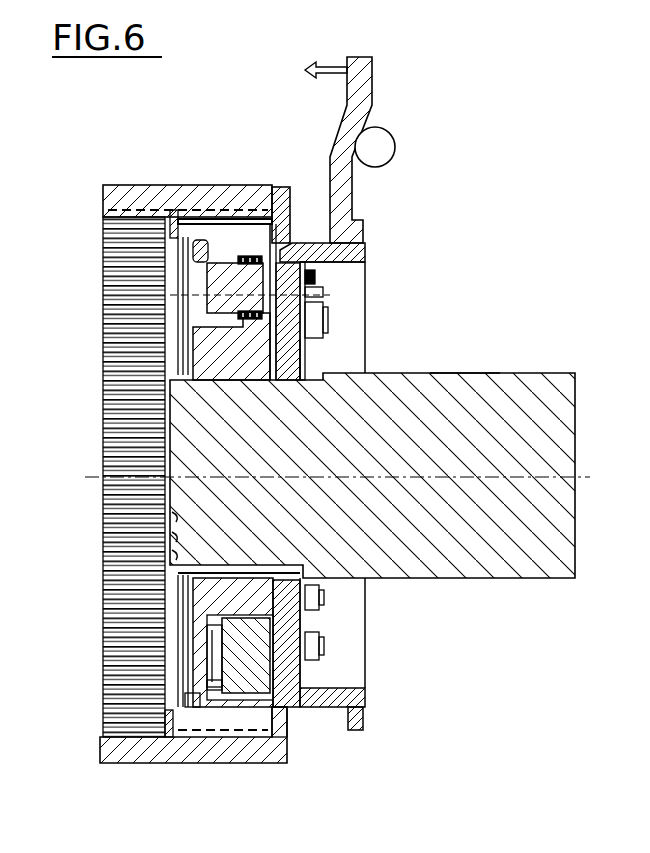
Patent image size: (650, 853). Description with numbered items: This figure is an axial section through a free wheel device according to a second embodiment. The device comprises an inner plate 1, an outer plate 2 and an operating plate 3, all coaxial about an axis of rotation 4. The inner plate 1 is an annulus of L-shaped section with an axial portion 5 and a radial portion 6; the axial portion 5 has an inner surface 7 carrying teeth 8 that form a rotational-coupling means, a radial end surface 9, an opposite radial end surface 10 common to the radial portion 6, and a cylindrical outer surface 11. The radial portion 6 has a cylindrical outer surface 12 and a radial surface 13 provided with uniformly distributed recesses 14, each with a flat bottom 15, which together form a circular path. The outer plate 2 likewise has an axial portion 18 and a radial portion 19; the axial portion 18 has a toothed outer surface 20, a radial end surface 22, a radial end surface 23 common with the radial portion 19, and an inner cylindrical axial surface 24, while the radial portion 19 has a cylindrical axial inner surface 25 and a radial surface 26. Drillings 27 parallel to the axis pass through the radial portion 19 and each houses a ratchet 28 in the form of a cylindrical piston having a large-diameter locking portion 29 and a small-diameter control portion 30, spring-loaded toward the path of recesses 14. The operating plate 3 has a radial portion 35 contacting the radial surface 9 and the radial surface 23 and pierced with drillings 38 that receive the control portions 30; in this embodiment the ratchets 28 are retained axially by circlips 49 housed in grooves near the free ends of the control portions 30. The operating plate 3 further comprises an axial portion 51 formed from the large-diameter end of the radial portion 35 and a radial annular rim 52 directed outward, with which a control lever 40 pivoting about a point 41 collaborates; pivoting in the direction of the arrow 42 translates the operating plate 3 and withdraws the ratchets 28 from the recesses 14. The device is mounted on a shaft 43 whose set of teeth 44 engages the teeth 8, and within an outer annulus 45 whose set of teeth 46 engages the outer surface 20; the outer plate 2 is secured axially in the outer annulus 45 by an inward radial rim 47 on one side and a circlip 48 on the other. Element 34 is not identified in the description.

The inner plate 1 is at (197, 612).
The outer plate 2 is at (275, 707).
The operating plate 3 is at (287, 677).
The axis of rotation 4 is at (518, 478).
The axial portion 5 is at (237, 593).
The radial portion 6 is at (208, 682).
The inner surface 7 is at (182, 552).
The teeth 8 is at (180, 535).
The radial end surface 9 is at (178, 515).
The radial end surface 10 is at (190, 583).
The cylindrical outer surface 11 is at (197, 667).
The cylindrical outer surface 12 is at (190, 703).
The radial surface 13 is at (237, 640).
The recesses 14 is at (210, 697).
The flat bottom 15 is at (257, 712).
The axial portion 18 is at (186, 255).
The radial portion 19 is at (290, 240).
The outer surface 20 is at (262, 250).
The radial end surface 22 is at (176, 242).
The radial end surface 23 is at (290, 207).
The inner cylindrical axial surface 24 is at (203, 257).
The cylindrical axial inner surface 25 is at (300, 346).
The radial surface 26 is at (222, 273).
The drillings 27 is at (302, 247).
The ratchets 28 is at (312, 295).
The locking portion 29 is at (243, 262).
The control portion 30 is at (325, 315).
The spacer ring 34 is at (177, 740).
The radial portion 35 is at (295, 262).
The drillings 38 is at (315, 285).
The control lever 40 is at (360, 88).
The point 41 is at (378, 138).
The arrow 42 is at (303, 70).
The shaft 43 is at (455, 410).
The set of teeth 44 is at (165, 411).
The outer annulus 45 is at (105, 200).
The set of teeth 46 is at (257, 218).
The radial rim 47 is at (280, 720).
The circlip 48 is at (167, 743).
The circlips 49 is at (305, 275).
The axial portion 51 is at (360, 697).
The radial annular rim 52 is at (360, 717).